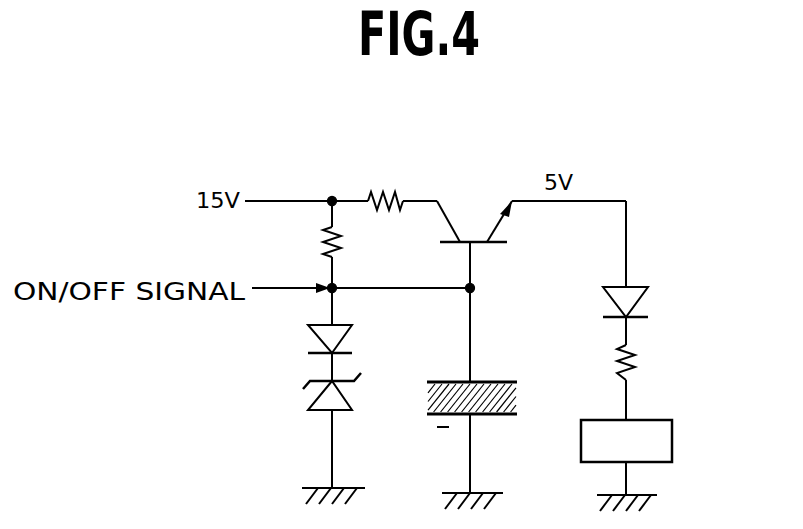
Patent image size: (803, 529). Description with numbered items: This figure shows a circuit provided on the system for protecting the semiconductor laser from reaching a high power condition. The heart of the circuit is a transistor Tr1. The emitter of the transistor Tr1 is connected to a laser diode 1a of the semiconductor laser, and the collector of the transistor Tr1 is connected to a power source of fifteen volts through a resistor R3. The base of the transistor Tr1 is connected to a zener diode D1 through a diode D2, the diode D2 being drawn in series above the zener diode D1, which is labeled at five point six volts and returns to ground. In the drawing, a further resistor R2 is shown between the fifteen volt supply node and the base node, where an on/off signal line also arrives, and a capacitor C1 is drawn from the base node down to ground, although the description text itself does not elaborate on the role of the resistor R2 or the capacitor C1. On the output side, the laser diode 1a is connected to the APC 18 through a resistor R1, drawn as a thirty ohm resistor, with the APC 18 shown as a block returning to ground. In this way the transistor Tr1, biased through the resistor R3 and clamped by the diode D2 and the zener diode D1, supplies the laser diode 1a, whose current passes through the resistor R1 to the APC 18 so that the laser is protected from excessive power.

The laser diode 1a is at (650, 272).
The APC 18 is at (672, 429).
The resistor R1 is at (649, 365).
The resistor R2 is at (309, 243).
The resistor R3 is at (385, 189).
The zener diode D1 is at (340, 393).
The diode D2 is at (311, 342).
The capacitor C1 is at (472, 401).
The transistor Tr1 is at (474, 207).